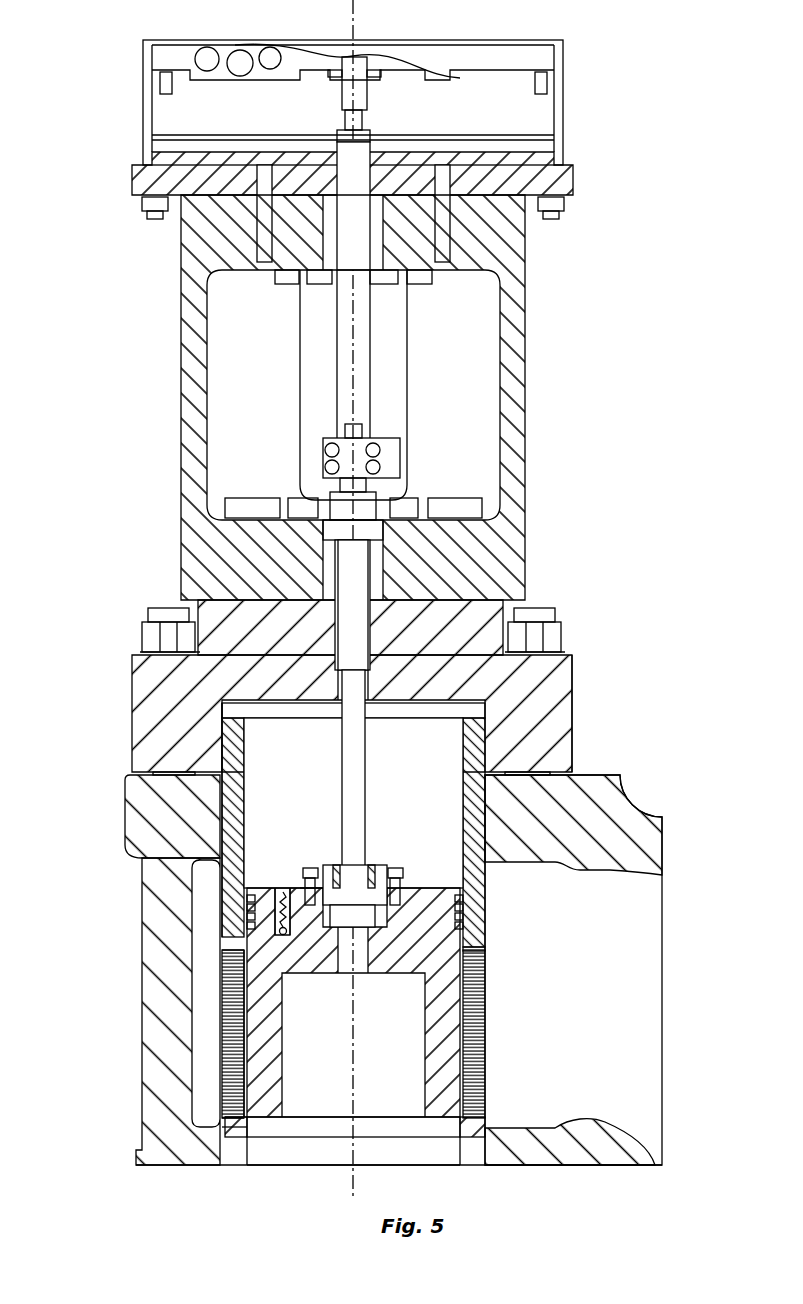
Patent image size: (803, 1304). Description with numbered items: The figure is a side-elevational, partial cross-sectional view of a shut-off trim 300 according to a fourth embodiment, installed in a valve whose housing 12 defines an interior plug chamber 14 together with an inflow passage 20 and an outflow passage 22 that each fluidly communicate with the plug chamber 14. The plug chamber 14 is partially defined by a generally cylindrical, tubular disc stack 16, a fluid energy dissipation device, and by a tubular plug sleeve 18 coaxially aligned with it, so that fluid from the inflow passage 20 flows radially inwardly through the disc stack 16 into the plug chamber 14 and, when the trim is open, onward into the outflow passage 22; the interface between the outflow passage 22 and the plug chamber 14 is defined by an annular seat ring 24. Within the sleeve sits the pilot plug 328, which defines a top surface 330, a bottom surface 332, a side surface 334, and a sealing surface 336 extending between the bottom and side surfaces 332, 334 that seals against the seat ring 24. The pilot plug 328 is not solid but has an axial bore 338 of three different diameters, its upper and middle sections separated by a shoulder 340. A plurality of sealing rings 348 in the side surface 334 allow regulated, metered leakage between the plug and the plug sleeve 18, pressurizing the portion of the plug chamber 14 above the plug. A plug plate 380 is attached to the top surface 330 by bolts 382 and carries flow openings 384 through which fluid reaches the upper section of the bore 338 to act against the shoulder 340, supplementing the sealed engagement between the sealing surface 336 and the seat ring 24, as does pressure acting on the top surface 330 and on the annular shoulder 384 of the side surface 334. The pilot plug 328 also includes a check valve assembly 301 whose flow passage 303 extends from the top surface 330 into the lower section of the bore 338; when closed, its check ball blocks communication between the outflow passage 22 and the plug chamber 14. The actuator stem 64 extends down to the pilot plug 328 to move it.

The housing 12 is at (588, 661).
The plug chamber 14 is at (420, 790).
The disc stack 16 is at (480, 977).
The plug sleeve 18 is at (477, 874).
The inflow passage 20 is at (650, 1025).
The outflow passage 22 is at (325, 1152).
The seat ring 24 is at (230, 1127).
The stem 64 is at (364, 738).
The shut-off trim 300 is at (278, 858).
The check valve assembly 301 is at (272, 912).
The flow passage 303 is at (232, 975).
The pilot plug 328 is at (467, 950).
The top surface 330 is at (222, 848).
The bottom surface 332 is at (268, 1120).
The side surface 334 is at (233, 1060).
The sealing surface 336 is at (230, 1130).
The bore 338 is at (408, 1027).
The shoulder 340 is at (240, 958).
The sealing rings 348 is at (250, 893).
The plug plate 380 is at (337, 868).
The bolts 382 is at (300, 888).
The flow openings 384 is at (225, 1004).